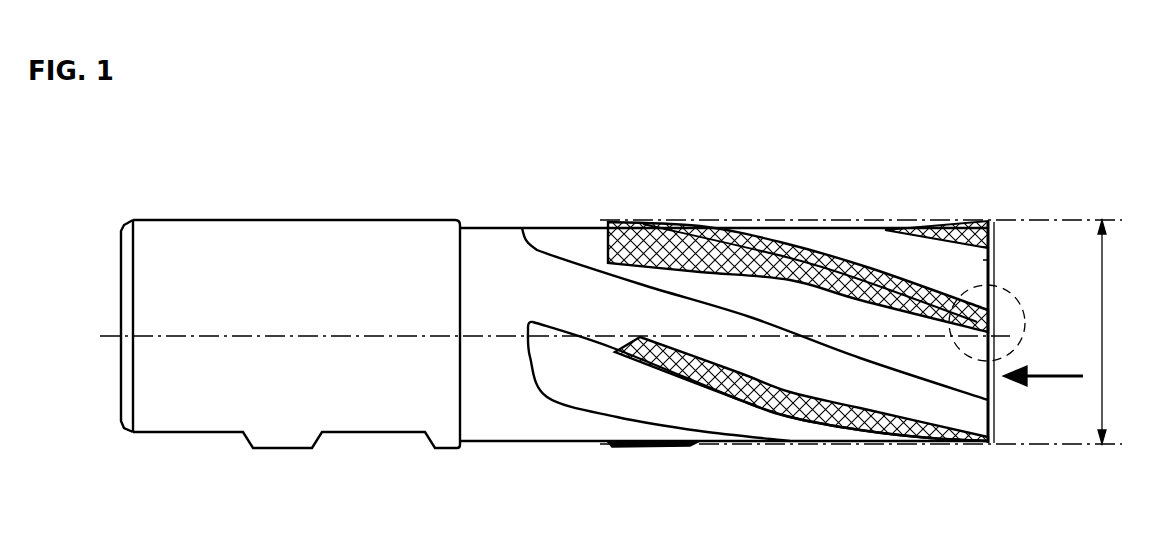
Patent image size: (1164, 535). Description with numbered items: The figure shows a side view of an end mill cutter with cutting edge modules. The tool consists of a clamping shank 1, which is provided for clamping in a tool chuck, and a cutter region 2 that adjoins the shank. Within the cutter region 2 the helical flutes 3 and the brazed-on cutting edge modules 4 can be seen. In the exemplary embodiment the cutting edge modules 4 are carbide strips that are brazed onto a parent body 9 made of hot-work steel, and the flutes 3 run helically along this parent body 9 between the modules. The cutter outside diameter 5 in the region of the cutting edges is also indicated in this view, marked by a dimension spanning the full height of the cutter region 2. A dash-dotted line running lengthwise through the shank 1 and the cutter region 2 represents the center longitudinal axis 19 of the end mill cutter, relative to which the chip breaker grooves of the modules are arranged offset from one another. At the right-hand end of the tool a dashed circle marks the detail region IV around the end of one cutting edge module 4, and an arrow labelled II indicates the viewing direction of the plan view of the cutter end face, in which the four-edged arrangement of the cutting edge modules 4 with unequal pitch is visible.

The clamping shank 1 is at (297, 220).
The cutter region 2 is at (993, 188).
The helical flutes 3 is at (604, 394).
The cutting edge modules 4 is at (967, 222).
The cutter outside diameter 5 is at (1102, 330).
The parent body 9 is at (489, 295).
The center longitudinal axis 19 is at (299, 338).
The detail IV is at (1009, 292).
The view direction II is at (1053, 380).